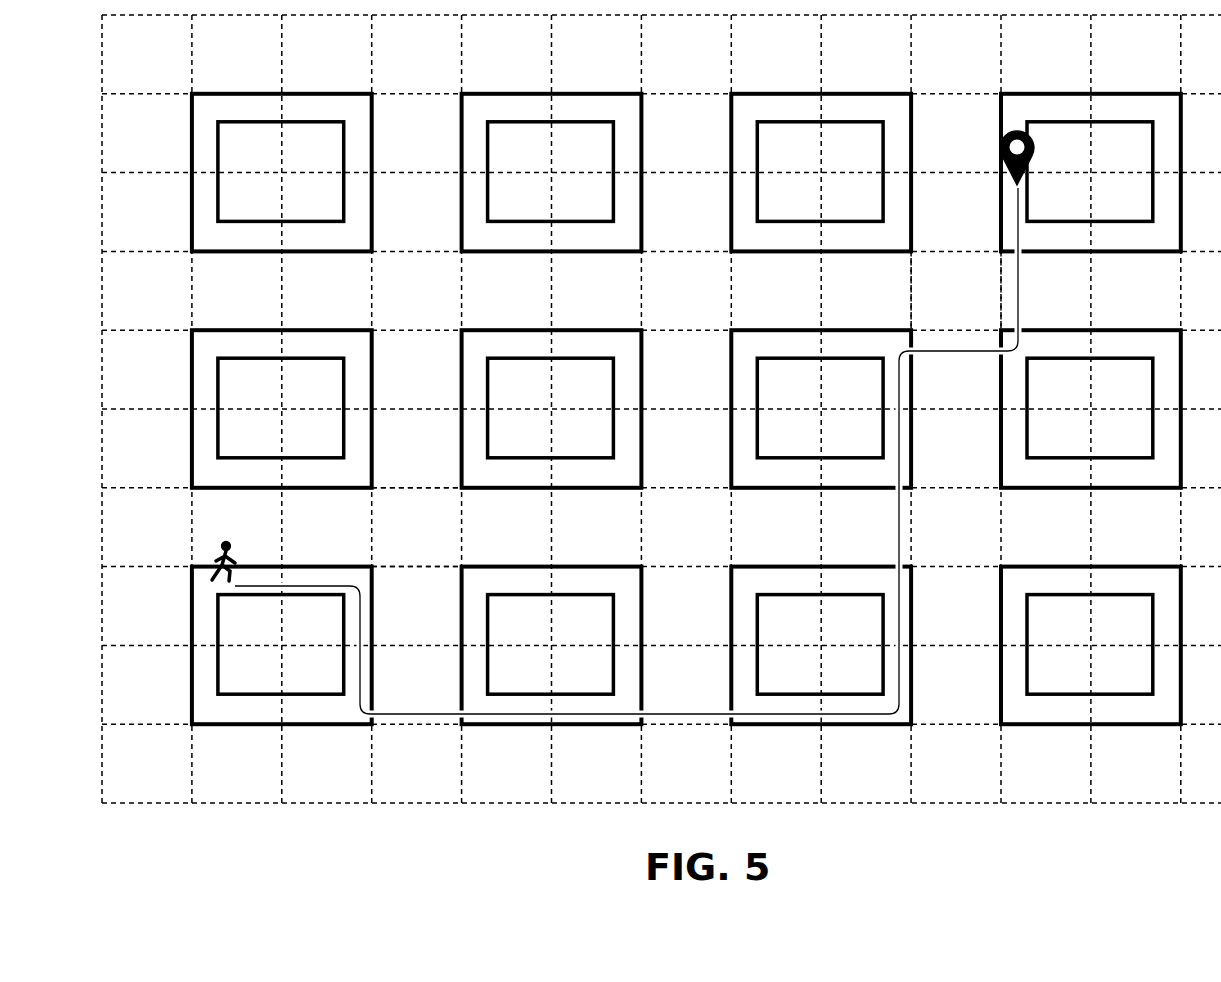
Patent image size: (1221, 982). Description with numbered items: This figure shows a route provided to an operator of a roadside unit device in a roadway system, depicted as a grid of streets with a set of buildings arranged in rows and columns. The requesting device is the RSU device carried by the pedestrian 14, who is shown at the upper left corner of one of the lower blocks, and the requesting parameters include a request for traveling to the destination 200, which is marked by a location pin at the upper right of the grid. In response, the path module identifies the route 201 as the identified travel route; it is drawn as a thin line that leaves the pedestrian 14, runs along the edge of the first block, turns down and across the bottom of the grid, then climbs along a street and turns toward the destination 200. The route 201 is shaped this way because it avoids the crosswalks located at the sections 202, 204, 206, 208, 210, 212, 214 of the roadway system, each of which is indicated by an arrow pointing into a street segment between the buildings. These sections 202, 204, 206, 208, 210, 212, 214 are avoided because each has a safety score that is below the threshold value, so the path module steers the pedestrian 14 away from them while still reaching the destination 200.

The pedestrian 14 is at (240, 552).
The destination 200 is at (1037, 159).
The route 201 is at (415, 716).
The section 202 is at (932, 230).
The section 204 is at (1069, 534).
The section 206 is at (954, 697).
The section 208 is at (439, 542).
The section 210 is at (399, 624).
The section 212 is at (250, 307).
The section 214 is at (360, 308).